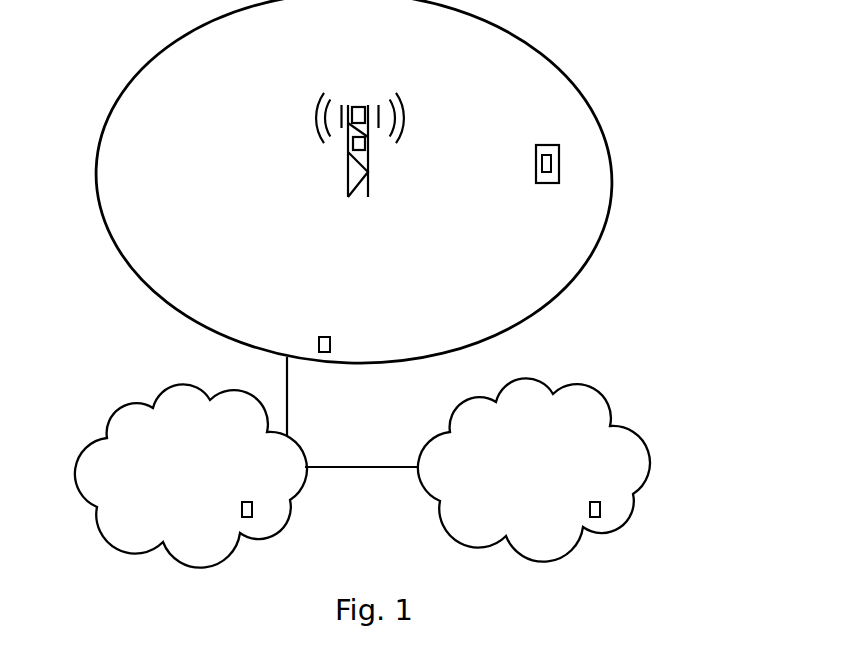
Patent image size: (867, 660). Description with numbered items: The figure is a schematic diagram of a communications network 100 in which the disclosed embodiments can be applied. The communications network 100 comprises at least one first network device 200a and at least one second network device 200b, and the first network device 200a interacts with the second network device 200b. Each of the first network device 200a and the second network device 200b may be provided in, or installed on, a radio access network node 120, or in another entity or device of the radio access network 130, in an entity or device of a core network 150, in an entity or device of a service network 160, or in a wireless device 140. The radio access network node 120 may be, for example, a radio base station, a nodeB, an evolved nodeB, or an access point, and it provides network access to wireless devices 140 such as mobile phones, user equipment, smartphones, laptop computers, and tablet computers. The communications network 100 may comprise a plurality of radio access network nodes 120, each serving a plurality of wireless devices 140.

The communications network 100 is at (668, 96).
The radio access network node 120 is at (368, 183).
The radio access network 130 is at (143, 287).
The wireless device 140 is at (547, 183).
The core network 150 is at (166, 436).
The service network 160 is at (514, 436).
The first network device 200a is at (404, 276).
The second network device 200b is at (348, 150).